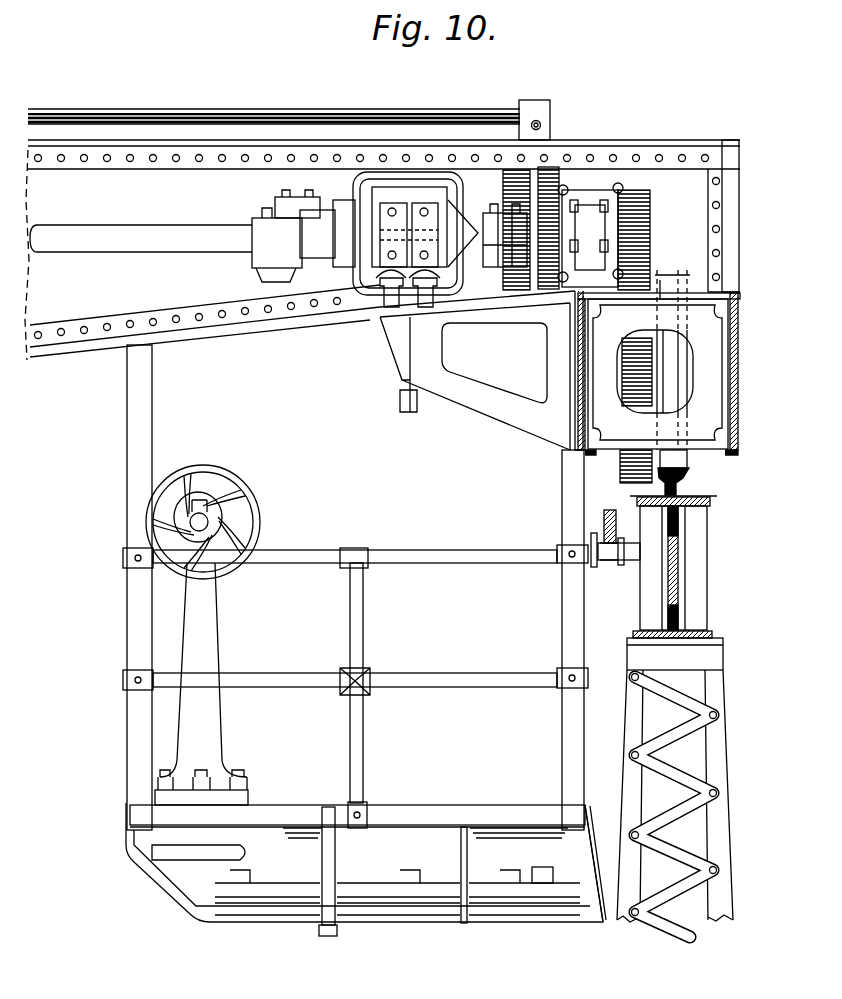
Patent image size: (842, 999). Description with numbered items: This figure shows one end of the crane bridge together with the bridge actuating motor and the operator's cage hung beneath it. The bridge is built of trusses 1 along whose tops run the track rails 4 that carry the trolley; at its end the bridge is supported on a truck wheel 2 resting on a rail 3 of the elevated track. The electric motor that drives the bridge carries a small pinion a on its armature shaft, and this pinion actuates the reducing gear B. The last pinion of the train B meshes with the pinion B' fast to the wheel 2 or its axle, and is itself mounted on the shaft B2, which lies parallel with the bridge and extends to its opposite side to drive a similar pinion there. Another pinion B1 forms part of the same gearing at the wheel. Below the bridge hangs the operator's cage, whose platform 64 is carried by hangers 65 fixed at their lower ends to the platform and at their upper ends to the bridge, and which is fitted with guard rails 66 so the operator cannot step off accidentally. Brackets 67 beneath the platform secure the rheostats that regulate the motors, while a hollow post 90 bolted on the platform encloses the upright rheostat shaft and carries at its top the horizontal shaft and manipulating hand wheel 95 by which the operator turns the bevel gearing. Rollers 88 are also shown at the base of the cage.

The track rail 4 is at (283, 113).
The truss 1 is at (267, 234).
The shaft B2 is at (141, 238).
The reducing gear B is at (534, 226).
The pinion B1 is at (650, 200).
The pinion a is at (594, 228).
The truck wheel 2 is at (668, 288).
The rail 3 is at (678, 484).
The pinion B' is at (636, 479).
The hanger 65 is at (132, 625).
The guard rail 66 is at (418, 557).
The hand wheel 95 is at (240, 480).
The hollow post 90 is at (192, 628).
The platform 64 is at (287, 807).
The roller 88 is at (308, 827).
The bracket 67 is at (172, 900).